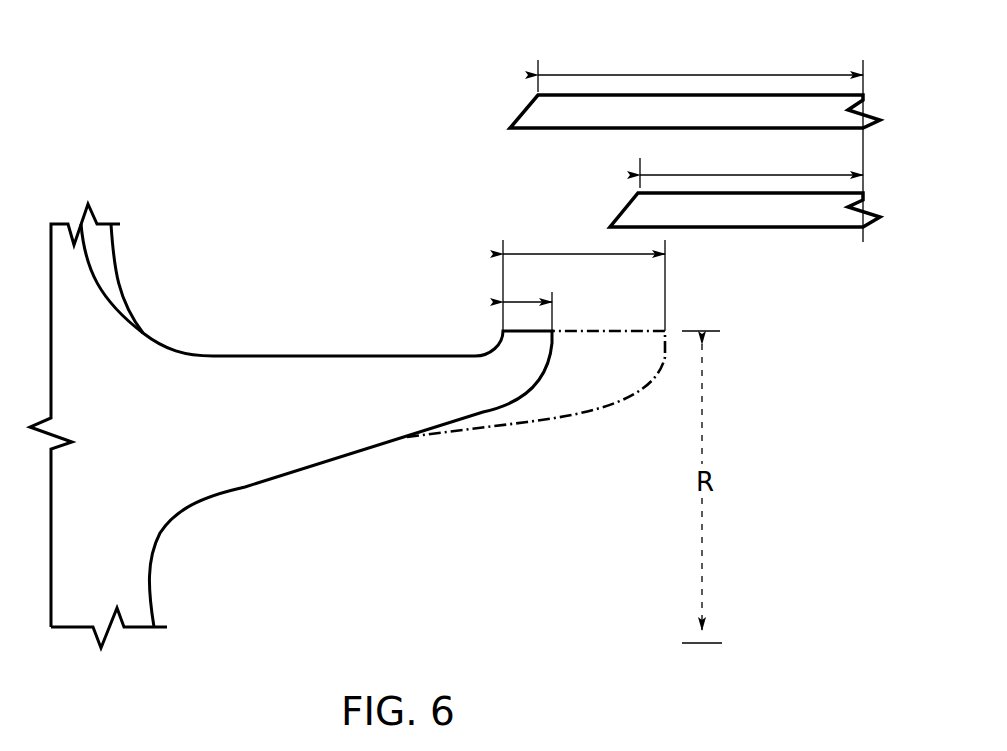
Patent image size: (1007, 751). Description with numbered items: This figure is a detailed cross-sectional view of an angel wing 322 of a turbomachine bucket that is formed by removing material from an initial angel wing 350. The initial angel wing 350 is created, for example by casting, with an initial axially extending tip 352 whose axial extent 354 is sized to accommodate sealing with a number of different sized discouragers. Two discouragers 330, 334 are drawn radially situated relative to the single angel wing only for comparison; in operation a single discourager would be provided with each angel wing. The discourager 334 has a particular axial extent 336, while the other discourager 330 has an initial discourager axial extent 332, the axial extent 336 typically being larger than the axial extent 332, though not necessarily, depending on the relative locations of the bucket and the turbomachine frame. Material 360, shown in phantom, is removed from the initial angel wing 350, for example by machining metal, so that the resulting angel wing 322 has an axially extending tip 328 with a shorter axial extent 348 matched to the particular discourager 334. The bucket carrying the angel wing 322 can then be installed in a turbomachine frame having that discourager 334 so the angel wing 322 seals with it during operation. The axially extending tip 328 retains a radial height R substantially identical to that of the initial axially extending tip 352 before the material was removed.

The angel wing 322 is at (296, 330).
The initial angel wing 350 is at (205, 380).
The axially extending tip 328 is at (520, 346).
The material 360 is at (583, 397).
The initial axially extending tip 352 is at (653, 343).
The axial extent 348 is at (527, 301).
The axial extent 354 is at (538, 248).
The discourager 334 is at (523, 110).
The discourager 330 is at (637, 210).
The discourager axial extent 336 is at (700, 75).
The initial discourager axial extent 332 is at (680, 173).